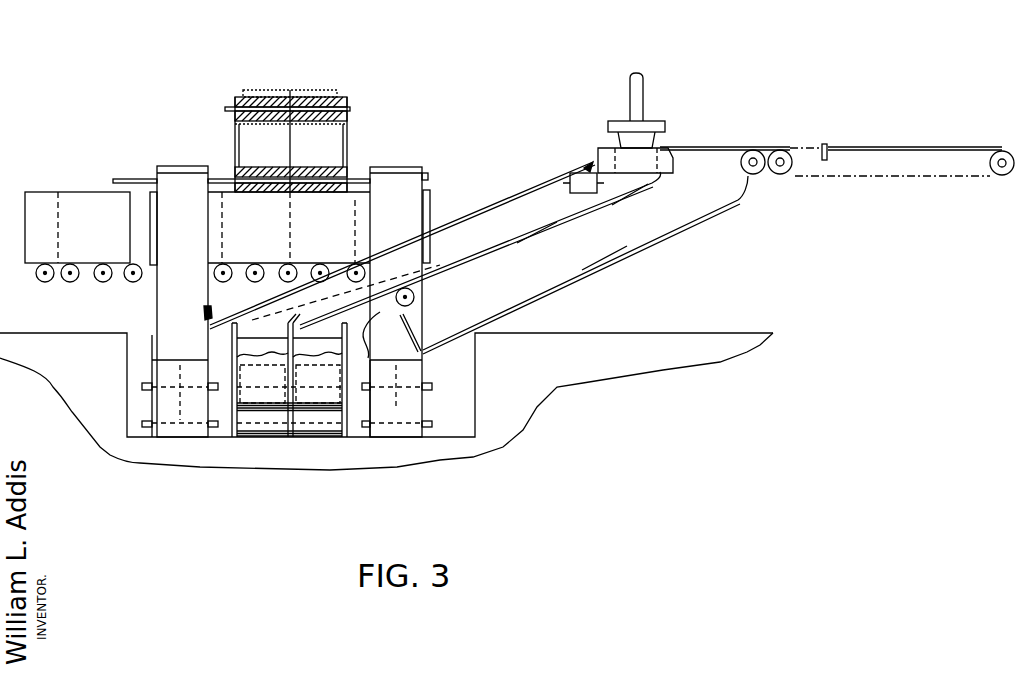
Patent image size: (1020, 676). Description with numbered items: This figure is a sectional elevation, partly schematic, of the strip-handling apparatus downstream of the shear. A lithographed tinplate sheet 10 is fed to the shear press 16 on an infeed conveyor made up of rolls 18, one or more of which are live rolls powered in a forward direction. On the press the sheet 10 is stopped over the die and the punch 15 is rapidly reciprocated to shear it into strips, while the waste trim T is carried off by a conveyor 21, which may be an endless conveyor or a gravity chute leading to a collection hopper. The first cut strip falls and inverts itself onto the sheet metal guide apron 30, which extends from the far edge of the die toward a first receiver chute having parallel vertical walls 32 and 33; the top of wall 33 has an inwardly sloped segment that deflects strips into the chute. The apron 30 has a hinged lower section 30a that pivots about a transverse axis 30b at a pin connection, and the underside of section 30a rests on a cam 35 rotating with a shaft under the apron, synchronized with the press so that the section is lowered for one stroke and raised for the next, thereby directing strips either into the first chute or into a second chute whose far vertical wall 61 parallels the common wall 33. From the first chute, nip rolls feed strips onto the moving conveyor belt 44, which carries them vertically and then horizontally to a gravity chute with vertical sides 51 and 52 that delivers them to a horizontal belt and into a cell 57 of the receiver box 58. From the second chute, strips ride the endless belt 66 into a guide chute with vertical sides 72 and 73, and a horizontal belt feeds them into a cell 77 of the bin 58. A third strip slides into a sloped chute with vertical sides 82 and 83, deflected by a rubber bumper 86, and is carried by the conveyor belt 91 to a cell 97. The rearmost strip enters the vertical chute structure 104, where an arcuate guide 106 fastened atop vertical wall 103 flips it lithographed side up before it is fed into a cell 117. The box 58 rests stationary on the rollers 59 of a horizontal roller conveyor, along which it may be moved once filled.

The sheet 10 is at (758, 146).
The punch 15 is at (618, 140).
The shear press 16 is at (600, 160).
The rolls 18 is at (997, 177).
The conveyor 21 is at (570, 190).
The guide apron 30 is at (598, 218).
The hinged lower section 30a is at (398, 266).
The transverse axis 30b is at (447, 268).
The vertical wall 32 is at (345, 437).
The wall 33 is at (290, 437).
The cam 35 is at (417, 296).
The conveyor belt 44 is at (320, 125).
The vertical side 51 is at (350, 92).
The vertical side 52 is at (297, 90).
The cell 57 is at (363, 198).
The receiver box 58 is at (428, 215).
The rollers 59 is at (48, 283).
The far vertical wall 61 is at (237, 437).
The endless belt 66 is at (262, 125).
The vertical side 72 is at (235, 95).
The vertical side 73 is at (289, 90).
The cell 77 is at (237, 205).
The vertical side 82 is at (143, 437).
The vertical side 83 is at (205, 437).
The rubber bumper 86 is at (205, 318).
The conveyor belt 91 is at (168, 168).
The cell 97 is at (213, 197).
The vertical wall 103 is at (370, 437).
The vertical chute structure 104 is at (425, 437).
The arcuate guide 106 is at (367, 333).
The cell 117 is at (365, 195).
The trim T is at (588, 161).